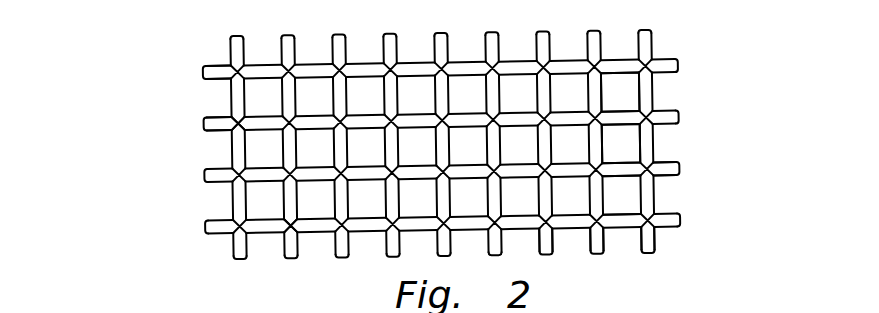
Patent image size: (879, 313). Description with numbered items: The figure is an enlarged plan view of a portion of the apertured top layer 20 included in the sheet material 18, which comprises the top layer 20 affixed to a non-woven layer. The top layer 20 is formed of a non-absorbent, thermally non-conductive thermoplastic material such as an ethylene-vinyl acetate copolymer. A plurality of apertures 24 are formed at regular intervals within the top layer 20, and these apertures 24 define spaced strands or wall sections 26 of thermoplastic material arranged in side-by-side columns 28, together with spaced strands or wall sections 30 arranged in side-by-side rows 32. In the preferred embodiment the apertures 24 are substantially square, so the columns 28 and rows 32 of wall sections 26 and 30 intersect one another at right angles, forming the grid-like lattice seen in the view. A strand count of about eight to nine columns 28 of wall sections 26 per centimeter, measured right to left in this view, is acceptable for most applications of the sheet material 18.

The apertured top layer 20 is at (128, 186).
The apertures 24 is at (622, 147).
The strands or wall sections 26 is at (620, 193).
The columns 28 is at (653, 252).
The strands or wall sections 30 is at (270, 216).
The rows 32 is at (199, 77).
The sheet material 18 is at (759, 304).